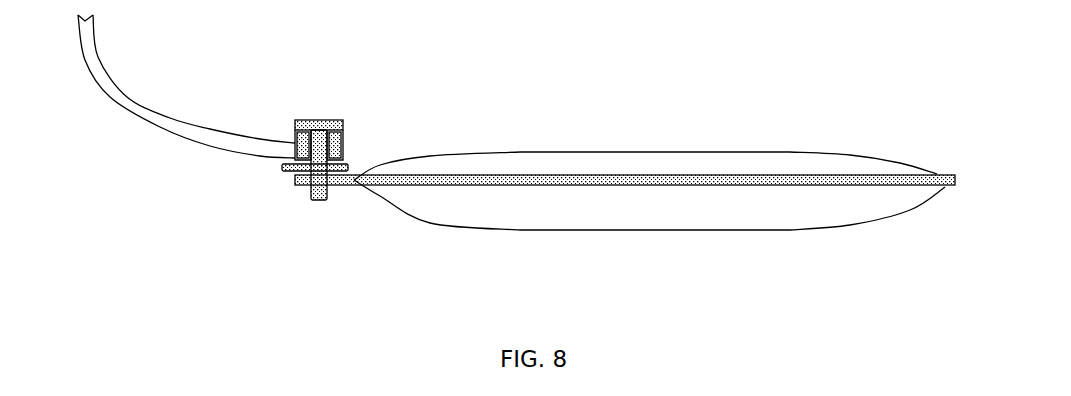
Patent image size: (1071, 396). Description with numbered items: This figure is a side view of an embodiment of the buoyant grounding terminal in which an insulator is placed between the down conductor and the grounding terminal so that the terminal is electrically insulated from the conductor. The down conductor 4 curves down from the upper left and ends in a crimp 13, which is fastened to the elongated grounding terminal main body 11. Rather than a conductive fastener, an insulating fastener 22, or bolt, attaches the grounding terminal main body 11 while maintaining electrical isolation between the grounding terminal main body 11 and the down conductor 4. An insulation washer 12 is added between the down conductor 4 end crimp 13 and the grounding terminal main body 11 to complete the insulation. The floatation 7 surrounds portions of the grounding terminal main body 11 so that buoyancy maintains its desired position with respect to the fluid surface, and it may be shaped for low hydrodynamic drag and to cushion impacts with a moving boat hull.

The down conductor 4 is at (165, 95).
The floatation 7 is at (553, 236).
The grounding terminal main body 11 is at (735, 193).
The insulation washer 12 is at (275, 172).
The crimp 13 is at (347, 147).
The insulating fastener 22 is at (318, 108).